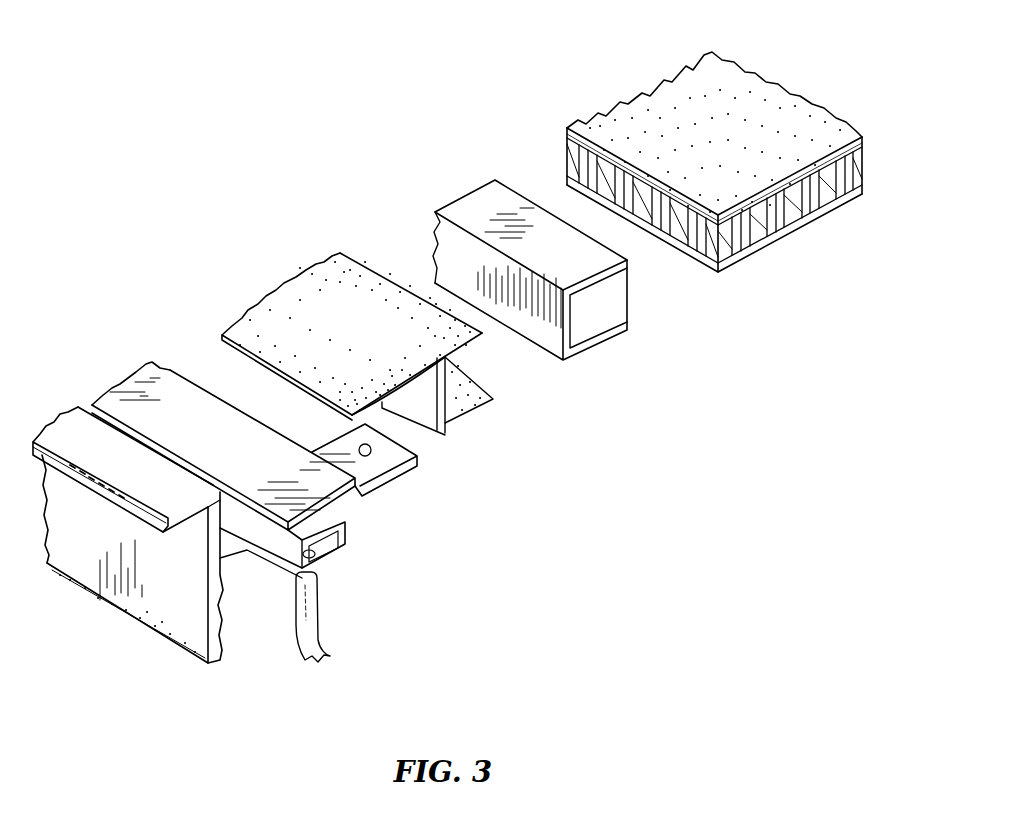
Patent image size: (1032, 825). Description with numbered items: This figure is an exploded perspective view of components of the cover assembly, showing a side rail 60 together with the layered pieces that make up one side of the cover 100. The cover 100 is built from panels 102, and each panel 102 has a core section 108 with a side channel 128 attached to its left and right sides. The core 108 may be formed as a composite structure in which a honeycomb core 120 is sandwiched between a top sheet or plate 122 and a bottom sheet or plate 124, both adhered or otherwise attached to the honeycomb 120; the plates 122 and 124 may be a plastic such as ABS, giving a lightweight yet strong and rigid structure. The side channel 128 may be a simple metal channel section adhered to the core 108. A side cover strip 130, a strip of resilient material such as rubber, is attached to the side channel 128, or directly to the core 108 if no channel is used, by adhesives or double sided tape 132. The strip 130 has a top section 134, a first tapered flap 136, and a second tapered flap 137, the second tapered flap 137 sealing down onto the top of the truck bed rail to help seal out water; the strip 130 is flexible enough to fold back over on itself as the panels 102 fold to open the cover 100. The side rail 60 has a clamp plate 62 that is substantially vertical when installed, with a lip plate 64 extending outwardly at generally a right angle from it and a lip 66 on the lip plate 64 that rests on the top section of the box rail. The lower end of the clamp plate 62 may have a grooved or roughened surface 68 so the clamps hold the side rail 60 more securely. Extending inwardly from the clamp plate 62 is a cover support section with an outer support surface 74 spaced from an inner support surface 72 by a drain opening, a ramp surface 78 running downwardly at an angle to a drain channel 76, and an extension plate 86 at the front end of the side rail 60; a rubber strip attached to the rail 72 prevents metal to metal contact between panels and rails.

The cover 100 is at (672, 210).
The panel 102 is at (672, 151).
The core section 108 is at (621, 92).
The top sheet or plate 122 is at (594, 117).
The honeycomb core 120 is at (566, 156).
The bottom sheet or plate 124 is at (780, 228).
The side channel 128 is at (588, 303).
The side cover strip 130 is at (328, 346).
The top section 134 is at (335, 270).
The first tapered flap 136 is at (230, 328).
The double sided tape 132 is at (474, 345).
The second tapered flap 137 is at (383, 410).
The side rail 60 is at (245, 512).
The clamp plate 62 is at (197, 617).
The lip plate 64 is at (120, 481).
The lip 66 is at (167, 528).
The grooved or roughened surface 68 is at (220, 627).
The inner support surface 72 is at (254, 439).
The extension plate 86 is at (357, 443).
The outer support surface 74 is at (225, 560).
The drain channel 76 is at (348, 556).
The ramp surface 78 is at (298, 580).